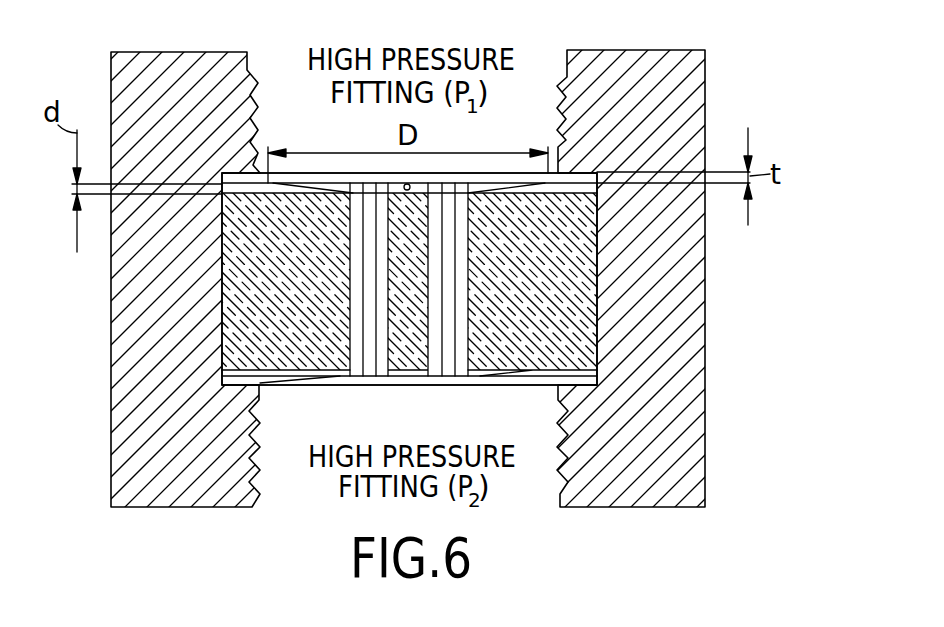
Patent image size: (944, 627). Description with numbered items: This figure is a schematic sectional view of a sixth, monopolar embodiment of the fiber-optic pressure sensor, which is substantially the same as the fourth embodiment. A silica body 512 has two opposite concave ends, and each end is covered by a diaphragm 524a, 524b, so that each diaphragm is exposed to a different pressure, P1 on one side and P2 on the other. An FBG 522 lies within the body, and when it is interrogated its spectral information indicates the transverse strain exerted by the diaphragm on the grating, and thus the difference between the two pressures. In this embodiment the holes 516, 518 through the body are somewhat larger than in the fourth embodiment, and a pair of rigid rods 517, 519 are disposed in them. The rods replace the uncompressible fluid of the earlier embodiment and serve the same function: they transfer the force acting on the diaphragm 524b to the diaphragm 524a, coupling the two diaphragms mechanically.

The silica body 512 is at (587, 225).
The hole 516 is at (400, 342).
The rigid rod 517 is at (333, 336).
The hole 518 is at (497, 297).
The rigid rod 519 is at (450, 320).
The FBG 522 is at (404, 188).
The diaphragm 524a is at (597, 172).
The diaphragm 524b is at (312, 387).